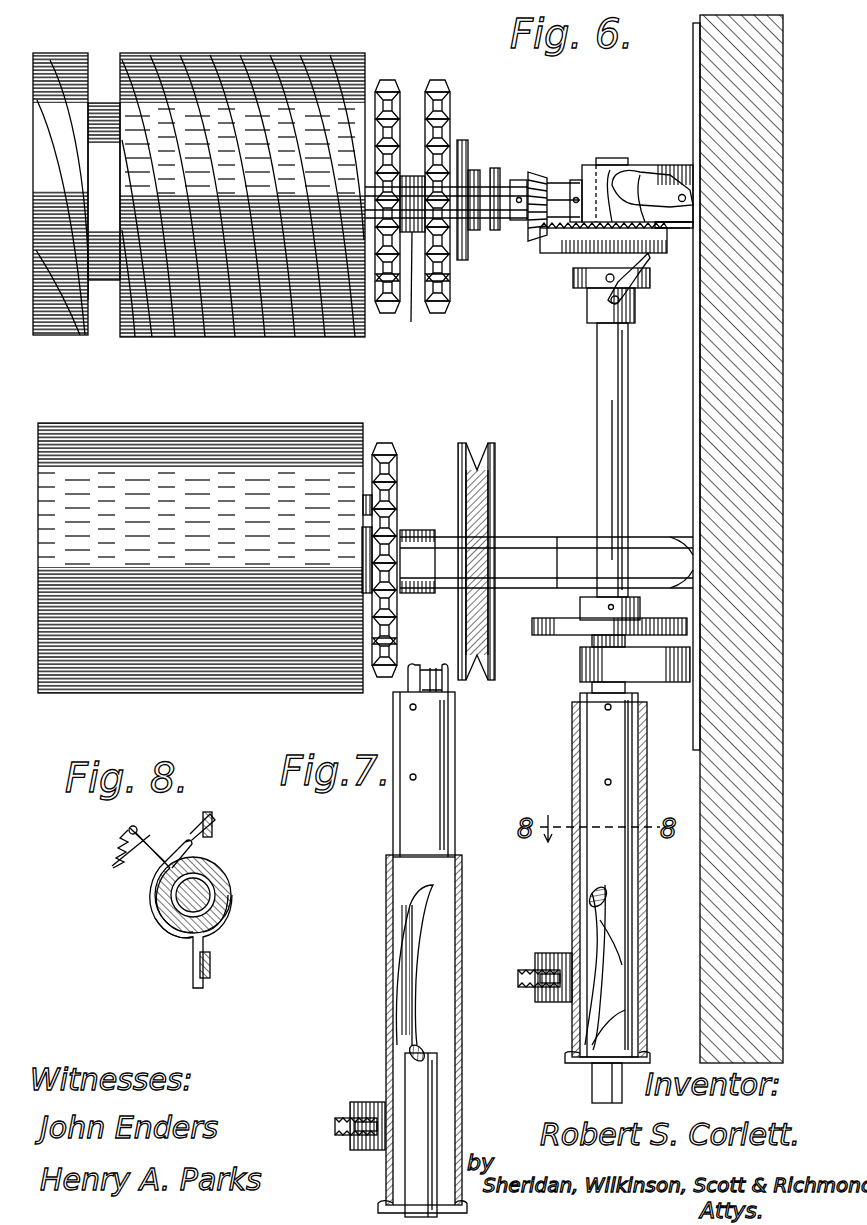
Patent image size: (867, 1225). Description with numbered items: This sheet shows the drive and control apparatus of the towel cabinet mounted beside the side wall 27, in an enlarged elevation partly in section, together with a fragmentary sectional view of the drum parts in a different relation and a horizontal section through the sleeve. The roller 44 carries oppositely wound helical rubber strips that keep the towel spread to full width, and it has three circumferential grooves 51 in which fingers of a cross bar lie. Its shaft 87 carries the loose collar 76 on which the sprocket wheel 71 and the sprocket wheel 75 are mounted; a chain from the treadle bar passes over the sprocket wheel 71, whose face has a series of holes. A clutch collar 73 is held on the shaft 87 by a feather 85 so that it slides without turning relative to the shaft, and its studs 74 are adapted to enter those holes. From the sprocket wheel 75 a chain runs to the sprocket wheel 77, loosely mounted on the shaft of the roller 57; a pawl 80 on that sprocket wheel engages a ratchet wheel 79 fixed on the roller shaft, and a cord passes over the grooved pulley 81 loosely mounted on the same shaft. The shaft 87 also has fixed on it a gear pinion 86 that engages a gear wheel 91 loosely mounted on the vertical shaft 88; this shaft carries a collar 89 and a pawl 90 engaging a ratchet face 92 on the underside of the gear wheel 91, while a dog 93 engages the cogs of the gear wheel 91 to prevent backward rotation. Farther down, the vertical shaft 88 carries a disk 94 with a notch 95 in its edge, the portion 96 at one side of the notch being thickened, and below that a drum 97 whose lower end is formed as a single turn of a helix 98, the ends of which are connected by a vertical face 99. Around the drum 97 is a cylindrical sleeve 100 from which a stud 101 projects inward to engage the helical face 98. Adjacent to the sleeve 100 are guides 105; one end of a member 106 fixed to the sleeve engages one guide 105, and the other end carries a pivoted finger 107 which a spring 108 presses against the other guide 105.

In FIG. 6, the side wall 27 is at (770, 760).
In FIG. 6, the roller 44 is at (199, 195).
In FIG. 6, the circumferential grooves 51 is at (104, 210).
In FIG. 6, the roller 57 is at (200, 558).
In FIG. 6, the sprocket wheel 71 is at (440, 92).
In FIG. 6, the clutch collar 73 is at (474, 170).
In FIG. 6, the studs 74 is at (463, 140).
In FIG. 6, the sprocket wheel 75 is at (388, 85).
In FIG. 6, the collar 76 is at (414, 291).
In FIG. 6, the sprocket wheel 77 is at (390, 455).
In FIG. 6, the ratchet wheel 79 is at (362, 555).
In FIG. 6, the pawl 80 is at (363, 505).
In FIG. 6, the grooved pulley 81 is at (484, 478).
In FIG. 6, the feather 85 is at (495, 178).
In FIG. 6, the gear pinion 86 is at (540, 172).
In FIG. 6, the shaft 87 is at (575, 183).
In FIG. 6, the vertical shaft 88 is at (628, 435).
In FIG. 7, the vertical shaft 88 is at (437, 1100).
In FIG. 8, the vertical shaft 88 is at (212, 880).
In FIG. 6, the collar 89 is at (635, 300).
In FIG. 6, the pawl 90 is at (645, 262).
In FIG. 6, the gear wheel 91 is at (690, 230).
In FIG. 6, the ratchet face 92 is at (570, 253).
In FIG. 6, the dog 93 is at (640, 180).
In FIG. 6, the disk 94 is at (558, 620).
In FIG. 6, the notch 95 is at (600, 626).
In FIG. 6, the thickened portion 96 is at (618, 635).
In FIG. 6, the drum 97 is at (609, 875).
In FIG. 7, the drum 97 is at (424, 760).
In FIG. 8, the drum 97 is at (232, 890).
In FIG. 6, the helix 98 is at (590, 930).
In FIG. 7, the helix 98 is at (400, 935).
In FIG. 6, the vertical face 99 is at (605, 1008).
In FIG. 7, the vertical face 99 is at (412, 972).
In FIG. 6, the cylindrical sleeve 100 is at (642, 866).
In FIG. 7, the cylindrical sleeve 100 is at (452, 1052).
In FIG. 8, the cylindrical sleeve 100 is at (232, 908).
In FIG. 6, the stud 101 is at (590, 892).
In FIG. 7, the stud 101 is at (410, 1055).
In FIG. 8, the guides 105 is at (212, 815).
In FIG. 6, the member 106 is at (550, 953).
In FIG. 7, the member 106 is at (365, 1150).
In FIG. 8, the member 106 is at (160, 928).
In FIG. 6, the finger 107 is at (524, 982).
In FIG. 7, the finger 107 is at (340, 1128).
In FIG. 8, the finger 107 is at (170, 840).
In FIG. 6, the spring 108 is at (522, 970).
In FIG. 7, the spring 108 is at (340, 1118).
In FIG. 8, the spring 108 is at (115, 850).